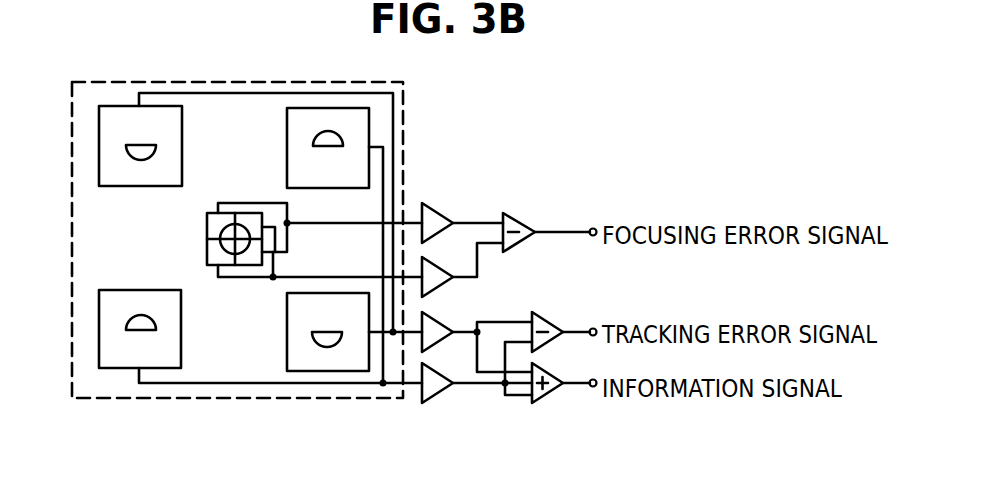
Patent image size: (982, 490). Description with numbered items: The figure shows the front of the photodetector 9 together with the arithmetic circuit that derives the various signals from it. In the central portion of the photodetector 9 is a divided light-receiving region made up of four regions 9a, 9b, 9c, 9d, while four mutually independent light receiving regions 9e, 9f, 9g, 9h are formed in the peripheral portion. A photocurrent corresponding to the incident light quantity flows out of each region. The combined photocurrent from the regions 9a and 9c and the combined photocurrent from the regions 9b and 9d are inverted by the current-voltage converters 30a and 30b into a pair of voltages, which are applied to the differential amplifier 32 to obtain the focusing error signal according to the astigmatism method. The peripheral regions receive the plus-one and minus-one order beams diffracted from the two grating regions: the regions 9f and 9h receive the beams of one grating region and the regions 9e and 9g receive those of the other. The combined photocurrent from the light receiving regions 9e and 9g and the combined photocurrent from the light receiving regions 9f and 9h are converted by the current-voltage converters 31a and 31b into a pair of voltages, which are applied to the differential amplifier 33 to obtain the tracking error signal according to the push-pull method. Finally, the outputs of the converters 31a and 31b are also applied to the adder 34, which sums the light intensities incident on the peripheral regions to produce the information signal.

The photodetector 9 is at (175, 400).
The light receiving region 9a is at (207, 222).
The light receiving region 9b is at (247, 203).
The light receiving region 9c is at (243, 277).
The light receiving region 9d is at (207, 252).
The light receiving region 9e is at (99, 148).
The light receiving region 9f is at (287, 130).
The light receiving region 9g is at (287, 350).
The light receiving region 9h is at (99, 322).
The current-voltage converter 30a is at (440, 208).
The current-voltage converter 30b is at (443, 267).
The current-voltage converter 31a is at (446, 297).
The current-voltage converter 31b is at (447, 388).
The differential amplifier 32 is at (528, 216).
The differential amplifier 33 is at (544, 320).
The adder 34 is at (548, 400).